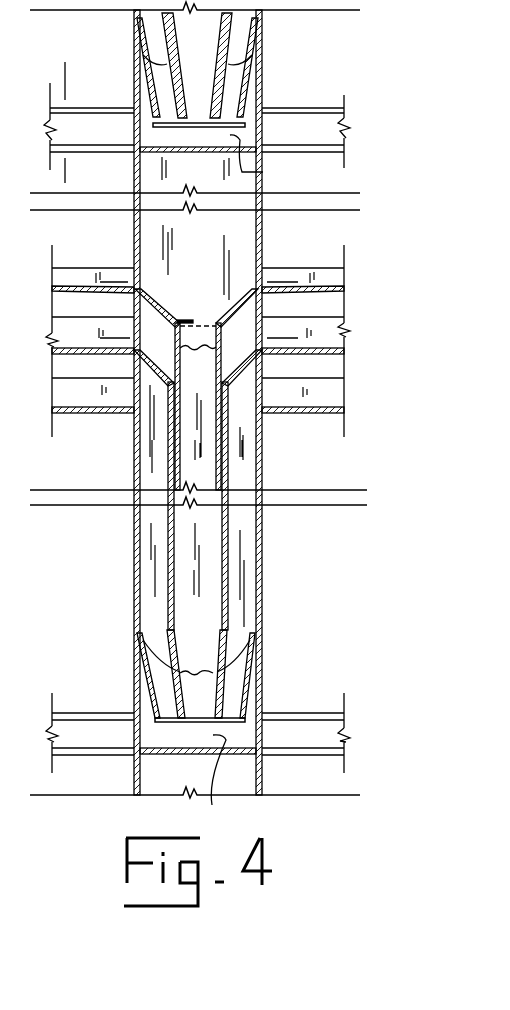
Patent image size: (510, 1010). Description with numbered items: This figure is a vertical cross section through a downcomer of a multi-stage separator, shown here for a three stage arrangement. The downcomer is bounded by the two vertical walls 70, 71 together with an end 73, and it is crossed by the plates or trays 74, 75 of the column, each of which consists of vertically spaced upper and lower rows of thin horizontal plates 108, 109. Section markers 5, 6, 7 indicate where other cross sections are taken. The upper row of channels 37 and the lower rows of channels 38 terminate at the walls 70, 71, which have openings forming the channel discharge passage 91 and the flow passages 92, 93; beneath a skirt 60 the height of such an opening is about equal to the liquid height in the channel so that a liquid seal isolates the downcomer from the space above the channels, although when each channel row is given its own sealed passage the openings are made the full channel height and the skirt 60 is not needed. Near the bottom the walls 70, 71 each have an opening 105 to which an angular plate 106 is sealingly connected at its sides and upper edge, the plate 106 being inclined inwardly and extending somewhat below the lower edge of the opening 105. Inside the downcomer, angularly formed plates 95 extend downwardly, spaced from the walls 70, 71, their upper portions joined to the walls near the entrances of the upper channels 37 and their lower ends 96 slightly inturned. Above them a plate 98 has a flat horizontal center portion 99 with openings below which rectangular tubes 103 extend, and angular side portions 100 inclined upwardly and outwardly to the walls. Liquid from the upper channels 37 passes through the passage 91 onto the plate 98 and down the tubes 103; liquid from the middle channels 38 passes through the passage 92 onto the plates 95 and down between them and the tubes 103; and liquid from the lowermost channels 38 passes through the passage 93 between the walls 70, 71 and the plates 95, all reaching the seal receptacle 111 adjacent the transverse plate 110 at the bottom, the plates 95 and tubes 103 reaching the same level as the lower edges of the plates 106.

The section line 5- 5 is at (113, 336).
The section line 6- 6 is at (113, 280).
The section line 7- 7 is at (61, 72).
The upper row of channels 37 is at (322, 295).
The channels 38 is at (62, 293).
The skirt 60 is at (256, 340).
The wall 70 is at (263, 24).
The wall 71 is at (133, 24).
The end 73 is at (204, 251).
The plate or tray 74 is at (78, 98).
The plate or tray 75 is at (78, 708).
The channel discharge passage 91 is at (253, 291).
The flow passage 92 is at (135, 348).
The flow passage 93 is at (134, 404).
The angularly formed plate 95 is at (163, 518).
The lower end 96 is at (143, 56).
The plate 98 is at (160, 300).
The flat horizontal center portion 99 is at (175, 325).
The angular side portion 100 is at (221, 323).
The rectangular tube 103 is at (222, 365).
The opening 105 is at (135, 78).
The angular plate 106 is at (146, 96).
The thin horizontal plate 108 is at (73, 722).
The thin horizontal plate 109 is at (72, 757).
The transverse plate 110 is at (184, 153).
The seal receptacle 111 is at (263, 172).